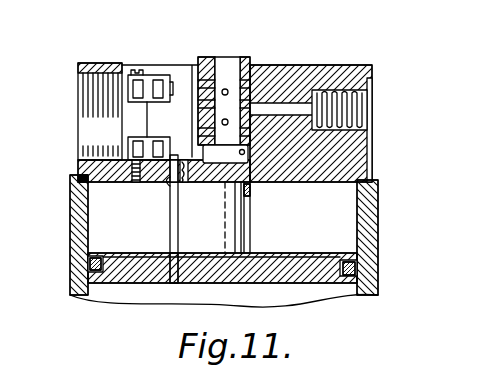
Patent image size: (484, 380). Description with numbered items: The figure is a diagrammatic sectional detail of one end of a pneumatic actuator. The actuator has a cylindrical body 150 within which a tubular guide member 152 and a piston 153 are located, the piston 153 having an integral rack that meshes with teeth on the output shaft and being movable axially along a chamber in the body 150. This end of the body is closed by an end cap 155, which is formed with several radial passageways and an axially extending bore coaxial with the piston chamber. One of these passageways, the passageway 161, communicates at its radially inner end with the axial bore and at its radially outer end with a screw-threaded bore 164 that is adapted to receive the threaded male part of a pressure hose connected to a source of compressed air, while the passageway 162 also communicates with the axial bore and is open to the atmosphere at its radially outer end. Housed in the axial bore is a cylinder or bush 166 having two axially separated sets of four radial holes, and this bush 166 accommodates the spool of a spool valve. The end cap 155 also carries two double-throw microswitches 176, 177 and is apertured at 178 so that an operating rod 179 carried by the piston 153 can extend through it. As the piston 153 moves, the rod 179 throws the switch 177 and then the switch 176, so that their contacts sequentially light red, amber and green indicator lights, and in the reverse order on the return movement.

The cylindrical body 150 is at (372, 231).
The tubular guide member 152 is at (240, 233).
The piston 153 is at (318, 278).
The end cap 155 is at (355, 150).
The radial passageway 161 is at (281, 103).
The radial passageway 162 is at (247, 194).
The screw-threaded bore 164 is at (342, 95).
The cylinder or bush 166 is at (248, 62).
The double-throw microswitch 176 is at (155, 75).
The double-throw microswitch 177 is at (132, 148).
The aperture 178 is at (170, 186).
The operating rod 179 is at (170, 230).